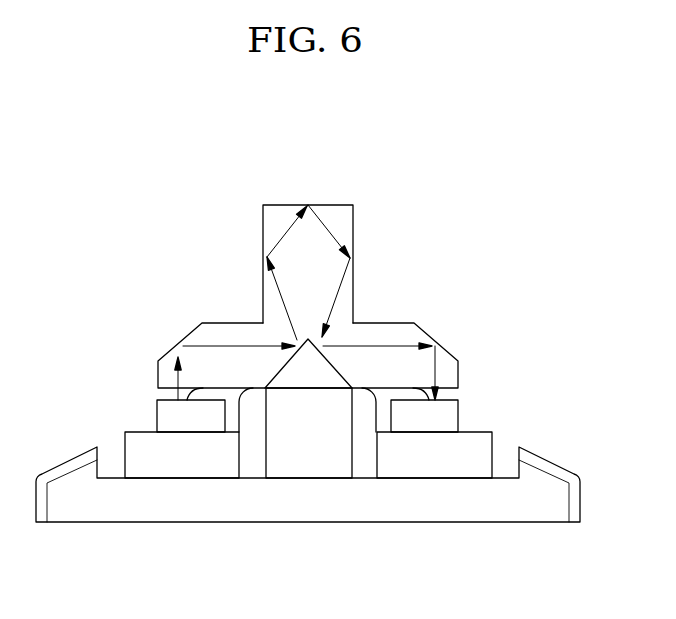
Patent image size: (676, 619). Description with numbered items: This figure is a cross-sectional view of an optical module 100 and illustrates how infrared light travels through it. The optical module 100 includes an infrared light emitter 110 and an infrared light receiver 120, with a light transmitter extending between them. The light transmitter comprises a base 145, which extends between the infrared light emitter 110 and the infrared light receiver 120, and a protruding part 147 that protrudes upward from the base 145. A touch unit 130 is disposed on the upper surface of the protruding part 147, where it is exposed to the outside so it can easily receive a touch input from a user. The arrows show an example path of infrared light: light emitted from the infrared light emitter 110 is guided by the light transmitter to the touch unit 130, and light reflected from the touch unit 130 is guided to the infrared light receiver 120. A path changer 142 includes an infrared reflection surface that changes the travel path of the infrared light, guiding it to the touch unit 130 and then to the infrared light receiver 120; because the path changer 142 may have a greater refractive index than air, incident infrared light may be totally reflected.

The optical module 100 is at (523, 166).
The infrared light emitter 110 is at (200, 422).
The infrared light receiver 120 is at (425, 418).
The touch unit 130 is at (308, 205).
The path changer 142 is at (287, 367).
The base 145 is at (480, 334).
The protruding part 147 is at (378, 270).